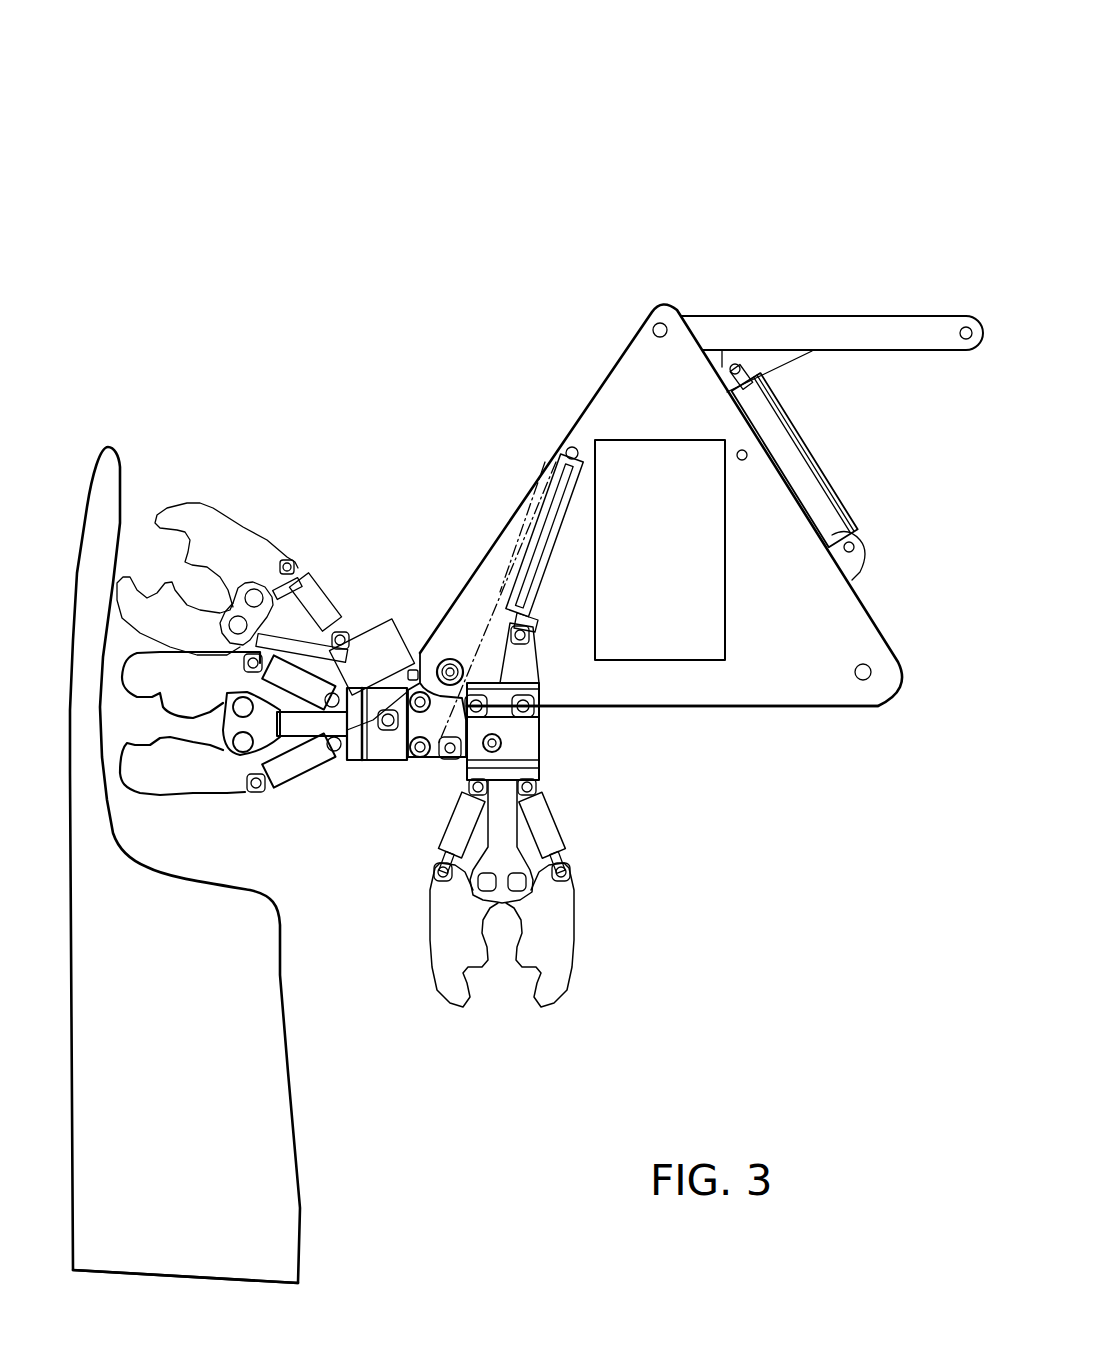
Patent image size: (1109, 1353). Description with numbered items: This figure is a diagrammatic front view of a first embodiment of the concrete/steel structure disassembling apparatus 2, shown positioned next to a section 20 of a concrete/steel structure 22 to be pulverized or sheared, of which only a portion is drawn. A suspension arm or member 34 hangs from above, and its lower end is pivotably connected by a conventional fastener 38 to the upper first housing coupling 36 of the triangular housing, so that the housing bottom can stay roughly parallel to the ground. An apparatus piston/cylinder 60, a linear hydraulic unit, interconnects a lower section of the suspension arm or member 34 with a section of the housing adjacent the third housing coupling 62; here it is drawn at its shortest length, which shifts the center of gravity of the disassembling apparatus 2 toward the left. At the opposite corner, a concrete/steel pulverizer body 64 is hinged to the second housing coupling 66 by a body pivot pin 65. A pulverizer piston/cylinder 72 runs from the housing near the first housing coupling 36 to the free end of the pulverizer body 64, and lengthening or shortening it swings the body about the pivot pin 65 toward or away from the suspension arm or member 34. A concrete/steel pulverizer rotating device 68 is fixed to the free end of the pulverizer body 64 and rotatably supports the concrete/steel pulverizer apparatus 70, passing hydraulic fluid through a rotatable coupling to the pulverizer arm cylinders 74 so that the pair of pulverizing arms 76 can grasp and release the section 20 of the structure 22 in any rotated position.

The concrete/steel structure disassembling apparatus 2 is at (692, 128).
The section of concrete/steel structure 20 is at (122, 474).
The concrete/steel structure 22 is at (190, 1205).
The suspension arm or member 34 is at (888, 308).
The first housing coupling 36 is at (697, 275).
The fastener 38 is at (650, 312).
The apparatus piston/cylinder 60 is at (833, 493).
The third housing coupling 62 is at (905, 718).
The concrete/steel pulverizer body 64 is at (540, 682).
The concrete/steel pulverizer body pivot pin 65 is at (455, 660).
The second housing coupling 66 is at (420, 660).
The concrete/steel pulverizer rotating device 68 is at (540, 757).
The concrete/steel pulverizer apparatus 70 is at (628, 937).
The pulverizer piston/cylinder 72 is at (562, 485).
The pulverizer arm cylinders 74 is at (448, 822).
The pulverizing arms 76 is at (436, 950).